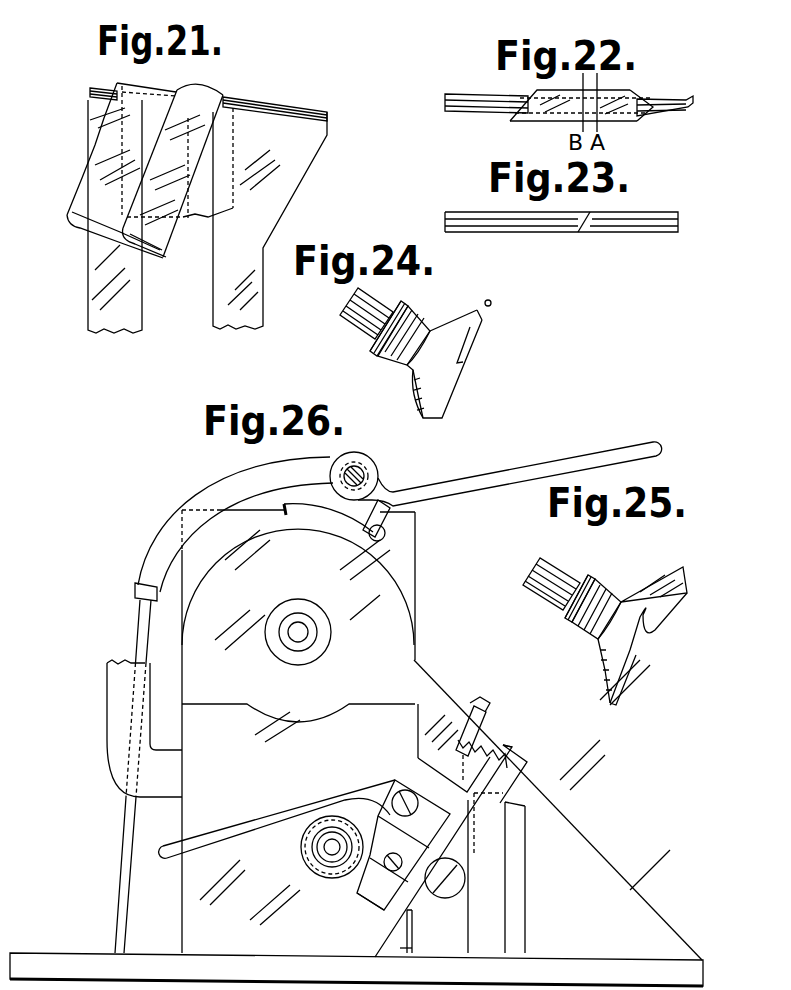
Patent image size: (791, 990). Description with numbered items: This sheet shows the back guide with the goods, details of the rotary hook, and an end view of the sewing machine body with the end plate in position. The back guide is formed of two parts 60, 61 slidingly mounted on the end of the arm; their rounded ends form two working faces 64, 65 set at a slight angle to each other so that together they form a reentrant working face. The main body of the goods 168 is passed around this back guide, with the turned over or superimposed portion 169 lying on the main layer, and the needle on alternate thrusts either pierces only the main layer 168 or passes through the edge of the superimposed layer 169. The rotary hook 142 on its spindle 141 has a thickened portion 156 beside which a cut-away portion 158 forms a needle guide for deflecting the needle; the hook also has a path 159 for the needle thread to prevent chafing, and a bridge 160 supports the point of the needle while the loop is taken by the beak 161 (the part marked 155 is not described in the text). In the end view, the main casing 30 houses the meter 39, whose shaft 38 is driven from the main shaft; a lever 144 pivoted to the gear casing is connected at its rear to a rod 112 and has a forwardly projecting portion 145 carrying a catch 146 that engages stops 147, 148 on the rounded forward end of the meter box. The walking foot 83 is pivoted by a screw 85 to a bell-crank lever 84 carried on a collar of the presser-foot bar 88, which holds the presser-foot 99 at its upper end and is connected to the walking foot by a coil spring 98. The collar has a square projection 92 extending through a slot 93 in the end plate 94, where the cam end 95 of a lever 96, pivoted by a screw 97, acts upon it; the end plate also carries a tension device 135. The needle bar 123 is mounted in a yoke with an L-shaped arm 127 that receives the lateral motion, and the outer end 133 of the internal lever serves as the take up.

In FIG. 26, the main casing 30 is at (602, 853).
In FIG. 26, the shaft of the meter 38 is at (298, 632).
In FIG. 26, the meter 39 is at (298, 589).
In FIG. 21, the part of the back guide 60 is at (270, 220).
In FIG. 21, the part of the back guide 61 is at (115, 216).
In FIG. 21, the working face 64 is at (293, 100).
In FIG. 22, the working face 64 is at (476, 100).
In FIG. 23, the working face 64 is at (502, 218).
In FIG. 21, the working face 65 is at (100, 88).
In FIG. 22, the working face 65 is at (667, 110).
In FIG. 23, the working face 65 is at (643, 222).
In FIG. 26, the walking foot 83 is at (510, 778).
In FIG. 26, the bell-crank lever 84 is at (420, 887).
In FIG. 26, the screw 85 is at (455, 880).
In FIG. 26, the presser-foot bar 88 is at (447, 757).
In FIG. 26, the square projection 92 is at (382, 843).
In FIG. 26, the slot 93 is at (360, 873).
In FIG. 26, the end plate 94 is at (243, 772).
In FIG. 26, the cam end 95 is at (433, 822).
In FIG. 26, the lever 96 is at (227, 833).
In FIG. 26, the screw 97 is at (400, 790).
In FIG. 26, the coil spring 98 is at (487, 745).
In FIG. 26, the presser-foot 99 is at (483, 703).
In FIG. 26, the rod 112 is at (128, 852).
In FIG. 26, the needle bar 123 is at (488, 933).
In FIG. 26, the L-shaped arm 127 is at (123, 705).
In FIG. 26, the outer end of lever 133 is at (405, 942).
In FIG. 26, the tension device 135 is at (301, 850).
In FIG. 24, the spindle 141 is at (362, 325).
In FIG. 25, the spindle 141 is at (550, 570).
In FIG. 24, the rotary hook 142 is at (417, 316).
In FIG. 25, the rotary hook 142 is at (612, 577).
In FIG. 26, the lever 144 is at (217, 492).
In FIG. 26, the forwardly projecting portion 145 is at (565, 463).
In FIG. 26, the catch 146 is at (395, 520).
In FIG. 26, the stop 147 is at (312, 506).
In FIG. 26, the stop 148 is at (383, 537).
In FIG. 25, the blade 155 is at (683, 593).
In FIG. 25, the thickened portion 156 is at (677, 565).
In FIG. 24, the cut-away portion 158 is at (420, 412).
In FIG. 25, the path 159 is at (607, 697).
In FIG. 24, the bridge 160 is at (475, 310).
In FIG. 24, the beak 161 is at (491, 304).
In FIG. 21, the main body of the goods 168 is at (150, 170).
In FIG. 22, the main body of the goods 168 is at (643, 97).
In FIG. 21, the superimposed portion of the goods 169 is at (212, 92).
In FIG. 22, the superimposed portion of the goods 169 is at (542, 115).